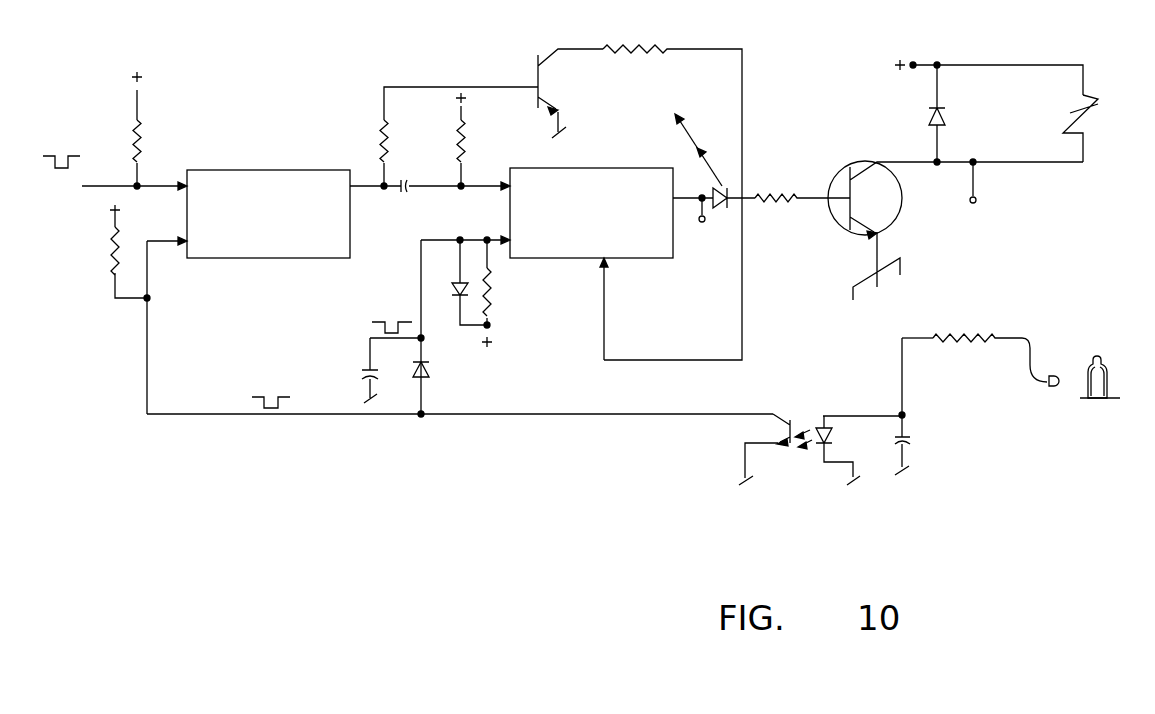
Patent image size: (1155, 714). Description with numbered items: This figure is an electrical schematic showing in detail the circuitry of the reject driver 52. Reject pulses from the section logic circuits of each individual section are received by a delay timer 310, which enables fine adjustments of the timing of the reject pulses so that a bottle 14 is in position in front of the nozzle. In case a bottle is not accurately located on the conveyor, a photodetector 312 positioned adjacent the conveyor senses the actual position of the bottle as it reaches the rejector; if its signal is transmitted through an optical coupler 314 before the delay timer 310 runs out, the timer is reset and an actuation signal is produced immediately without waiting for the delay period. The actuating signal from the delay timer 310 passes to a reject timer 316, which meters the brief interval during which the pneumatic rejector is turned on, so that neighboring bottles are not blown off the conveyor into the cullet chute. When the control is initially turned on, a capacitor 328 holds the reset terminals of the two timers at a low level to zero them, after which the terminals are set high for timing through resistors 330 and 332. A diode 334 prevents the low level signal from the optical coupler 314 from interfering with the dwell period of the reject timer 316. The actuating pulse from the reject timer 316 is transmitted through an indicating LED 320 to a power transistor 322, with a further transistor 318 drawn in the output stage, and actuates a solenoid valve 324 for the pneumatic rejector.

The container 14 is at (1110, 400).
The reject driver 52 is at (147, 465).
The delay timer 310 is at (328, 170).
The photodetector 312 is at (1050, 388).
The optical coupler 314 is at (802, 420).
The reject timer 316 is at (624, 172).
The transistor 318 is at (533, 69).
The indicating LED 320 is at (722, 186).
The power transistor 322 is at (860, 162).
The solenoid valve 324 is at (1107, 112).
The capacitor 328 is at (362, 372).
The resistor 330 is at (112, 250).
The resistor 332 is at (489, 298).
The diode 334 is at (430, 368).